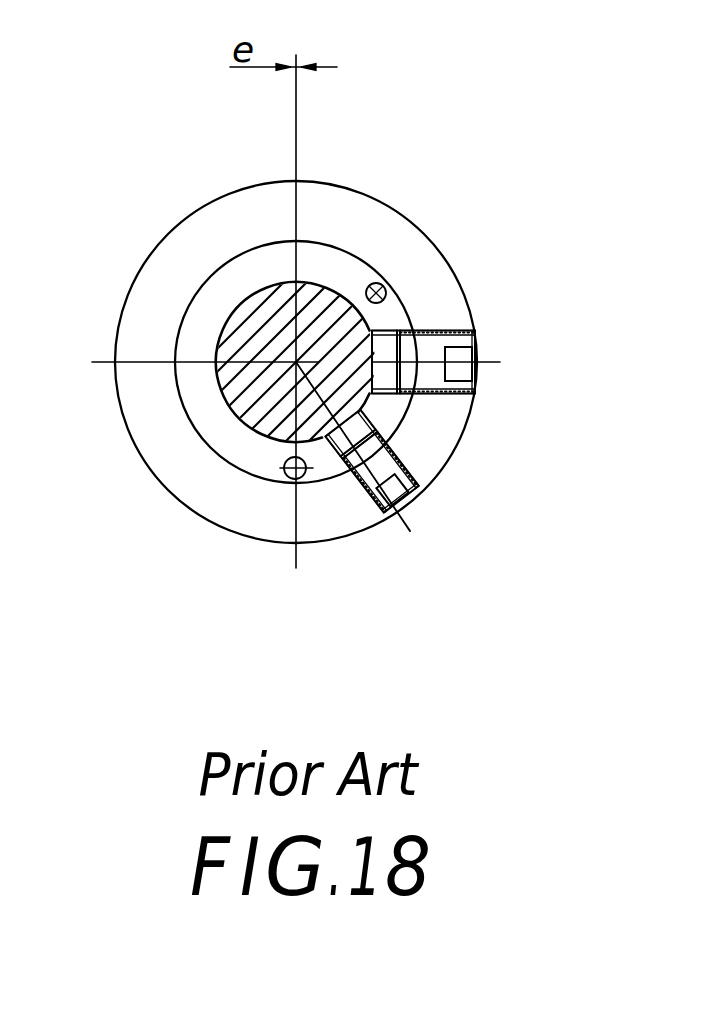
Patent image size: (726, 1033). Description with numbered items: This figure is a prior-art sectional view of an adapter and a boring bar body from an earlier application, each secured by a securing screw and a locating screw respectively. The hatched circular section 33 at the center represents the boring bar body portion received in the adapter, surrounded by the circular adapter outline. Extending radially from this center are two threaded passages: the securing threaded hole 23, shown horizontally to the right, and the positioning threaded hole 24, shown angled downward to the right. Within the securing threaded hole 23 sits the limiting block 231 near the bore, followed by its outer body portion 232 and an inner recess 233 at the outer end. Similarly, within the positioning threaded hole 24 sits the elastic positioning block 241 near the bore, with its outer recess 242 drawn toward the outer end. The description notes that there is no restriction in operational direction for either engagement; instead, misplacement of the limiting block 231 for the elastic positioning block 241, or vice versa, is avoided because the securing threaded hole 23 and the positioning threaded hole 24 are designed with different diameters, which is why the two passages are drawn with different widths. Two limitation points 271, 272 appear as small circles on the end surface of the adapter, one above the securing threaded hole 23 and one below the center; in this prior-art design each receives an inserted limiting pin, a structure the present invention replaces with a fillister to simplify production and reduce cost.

The eccentric shaft 33 is at (257, 328).
The securing threaded hole 23 is at (442, 329).
The limiting block 231 is at (407, 395).
The second section of first adjusting member 232 is at (410, 365).
The recess of first adjusting member 233 is at (455, 368).
The positioning threaded hole 24 is at (365, 485).
The elastic positioning block 241 is at (347, 437).
The recess of second adjusting member 242 is at (402, 505).
The limitation point 271 is at (381, 282).
The limitation point 272 is at (283, 478).